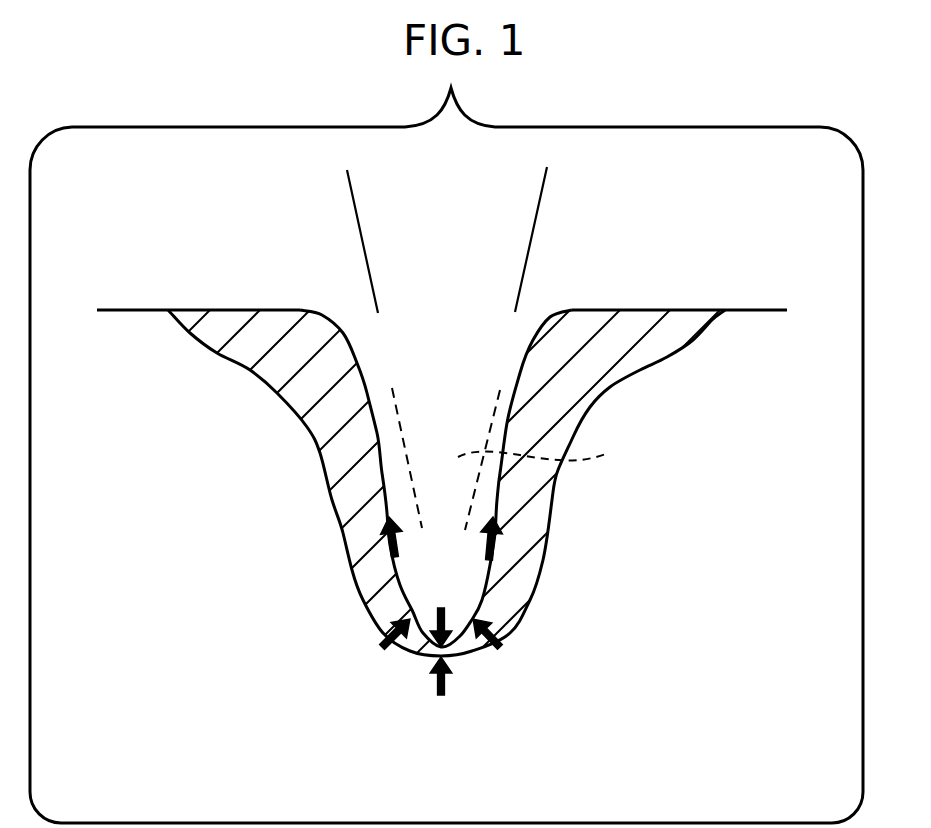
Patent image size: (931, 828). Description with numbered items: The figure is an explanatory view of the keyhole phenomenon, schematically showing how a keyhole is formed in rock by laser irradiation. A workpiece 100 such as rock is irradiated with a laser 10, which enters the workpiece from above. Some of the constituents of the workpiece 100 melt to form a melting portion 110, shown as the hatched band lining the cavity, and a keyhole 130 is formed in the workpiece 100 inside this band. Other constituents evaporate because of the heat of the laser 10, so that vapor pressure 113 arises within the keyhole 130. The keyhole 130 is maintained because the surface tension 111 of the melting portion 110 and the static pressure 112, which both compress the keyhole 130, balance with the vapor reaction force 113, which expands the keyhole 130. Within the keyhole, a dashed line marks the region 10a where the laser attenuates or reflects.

The laser 10 is at (507, 228).
The region where the laser attenuates or reflects 10a is at (558, 457).
The workpiece 100 is at (744, 330).
The melting portion 110 is at (623, 327).
The surface tension 111 is at (497, 562).
The static pressure 112 is at (447, 673).
The vapor pressure 113 is at (463, 600).
The keyhole 130 is at (365, 387).